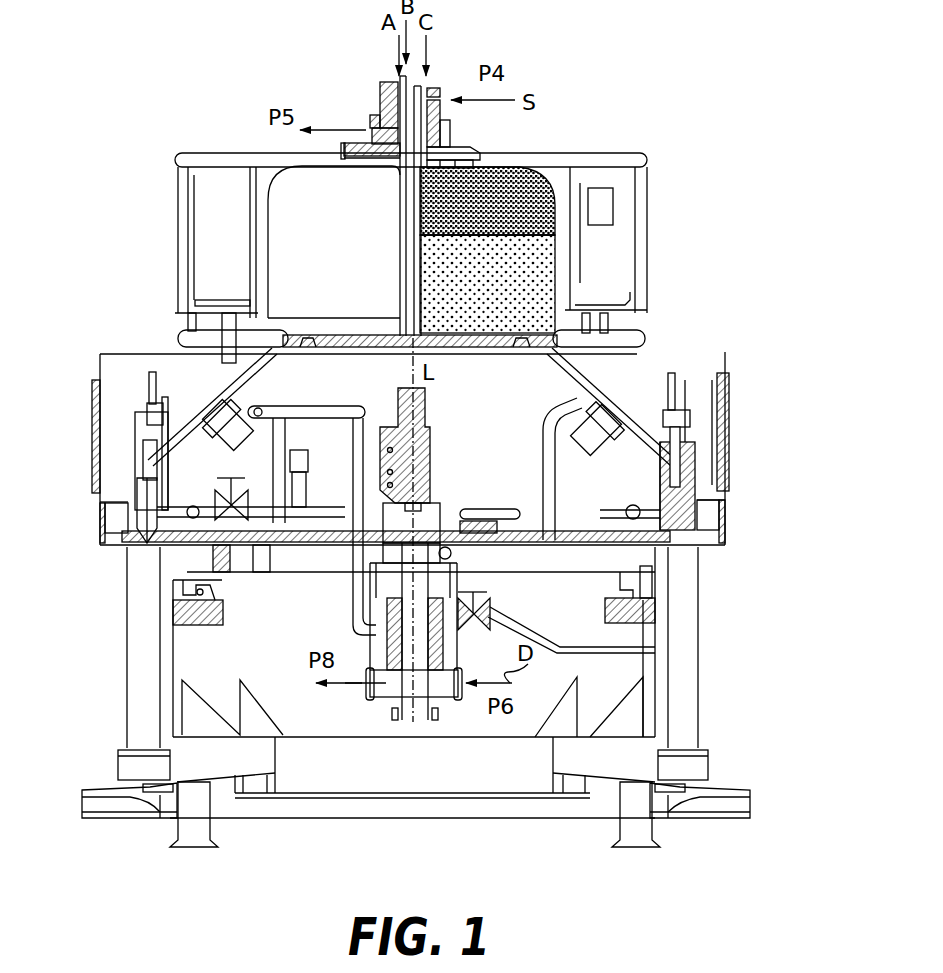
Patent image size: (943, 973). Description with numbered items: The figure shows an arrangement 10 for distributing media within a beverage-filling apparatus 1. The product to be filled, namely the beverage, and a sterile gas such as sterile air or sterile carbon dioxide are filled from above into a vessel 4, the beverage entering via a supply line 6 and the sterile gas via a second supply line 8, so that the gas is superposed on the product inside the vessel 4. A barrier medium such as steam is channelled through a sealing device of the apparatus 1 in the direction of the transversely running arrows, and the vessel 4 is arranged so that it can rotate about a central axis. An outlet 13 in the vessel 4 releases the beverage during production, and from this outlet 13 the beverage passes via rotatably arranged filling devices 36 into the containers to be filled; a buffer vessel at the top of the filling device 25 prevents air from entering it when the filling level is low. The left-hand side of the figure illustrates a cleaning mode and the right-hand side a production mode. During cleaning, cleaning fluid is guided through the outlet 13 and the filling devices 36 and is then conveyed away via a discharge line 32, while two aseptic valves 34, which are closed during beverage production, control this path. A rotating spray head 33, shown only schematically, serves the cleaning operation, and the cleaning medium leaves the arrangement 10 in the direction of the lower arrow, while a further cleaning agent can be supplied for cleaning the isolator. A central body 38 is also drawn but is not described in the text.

The apparatus 1 is at (662, 220).
The vessel 4 is at (487, 210).
The supply line 6 is at (398, 112).
The second supply line 8 is at (398, 97).
The arrangement for distributing media 10 is at (714, 315).
The outlet 13 is at (277, 343).
The filling device 25 is at (755, 423).
The discharge line 32 is at (300, 515).
The rotating spray head 33 is at (664, 640).
The aseptic valves 34 is at (215, 490).
The filling devices 36 is at (128, 455).
The central body 38 is at (430, 472).